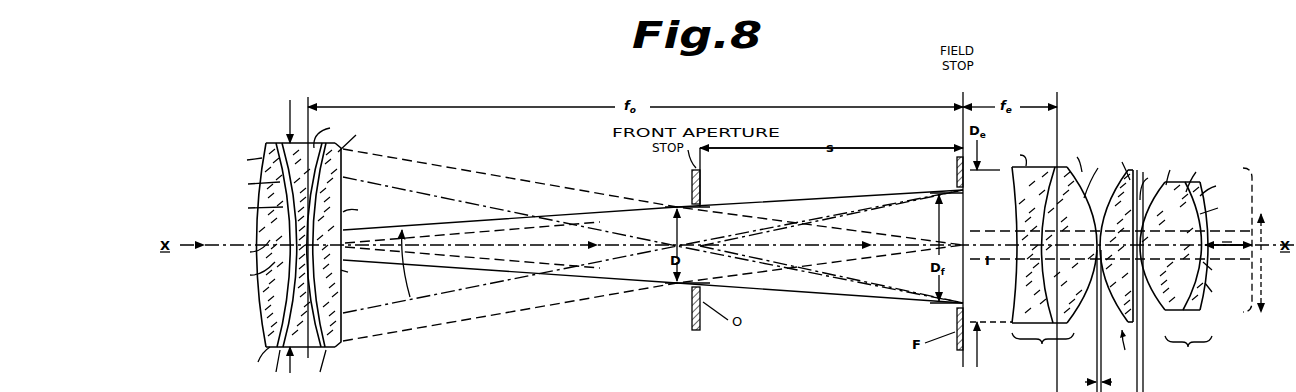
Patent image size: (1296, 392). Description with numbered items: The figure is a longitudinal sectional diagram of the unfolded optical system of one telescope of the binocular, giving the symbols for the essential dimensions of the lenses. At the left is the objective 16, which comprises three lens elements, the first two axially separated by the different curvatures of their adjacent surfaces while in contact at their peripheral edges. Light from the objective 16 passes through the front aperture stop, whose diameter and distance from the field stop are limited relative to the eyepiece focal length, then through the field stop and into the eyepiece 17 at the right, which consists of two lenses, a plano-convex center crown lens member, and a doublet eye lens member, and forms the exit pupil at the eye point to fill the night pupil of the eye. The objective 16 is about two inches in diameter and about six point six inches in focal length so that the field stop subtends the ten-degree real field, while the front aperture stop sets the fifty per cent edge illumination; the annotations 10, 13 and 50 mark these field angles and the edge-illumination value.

The objective 16 is at (278, 117).
The eyepiece 17 is at (1123, 132).
The real field angle (10 degrees) 10 is at (460, 235).
The field angle at field stop (13 degrees) 13 is at (831, 246).
The 50% E.B. marker 50 is at (394, 264).